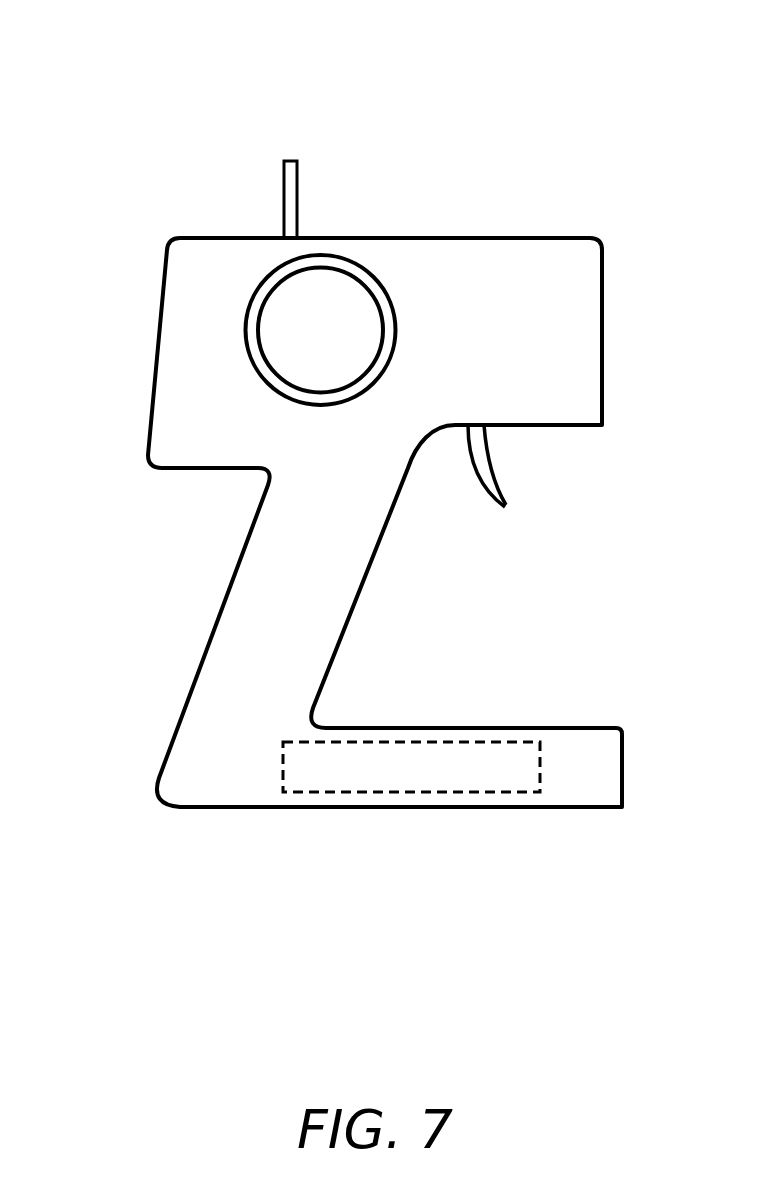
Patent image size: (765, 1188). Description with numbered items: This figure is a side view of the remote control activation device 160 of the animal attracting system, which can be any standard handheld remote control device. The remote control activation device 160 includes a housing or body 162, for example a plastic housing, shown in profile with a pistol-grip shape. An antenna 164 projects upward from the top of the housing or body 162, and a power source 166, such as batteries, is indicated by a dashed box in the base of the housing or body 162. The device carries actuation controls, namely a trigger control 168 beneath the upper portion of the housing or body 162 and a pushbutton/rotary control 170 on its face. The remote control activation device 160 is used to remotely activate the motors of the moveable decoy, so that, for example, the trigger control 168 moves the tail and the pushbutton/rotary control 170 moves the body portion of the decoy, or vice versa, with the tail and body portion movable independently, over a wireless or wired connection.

The remote control activation device 160 is at (145, 75).
The housing or body 162 is at (602, 321).
The antenna 164 is at (297, 184).
The power source 166 is at (512, 781).
The trigger control 168 is at (490, 495).
The pushbutton/rotary control 170 is at (393, 305).